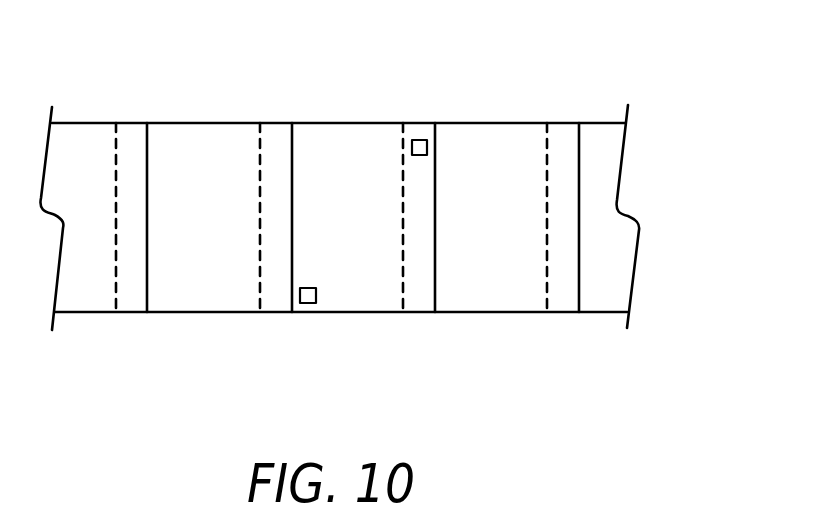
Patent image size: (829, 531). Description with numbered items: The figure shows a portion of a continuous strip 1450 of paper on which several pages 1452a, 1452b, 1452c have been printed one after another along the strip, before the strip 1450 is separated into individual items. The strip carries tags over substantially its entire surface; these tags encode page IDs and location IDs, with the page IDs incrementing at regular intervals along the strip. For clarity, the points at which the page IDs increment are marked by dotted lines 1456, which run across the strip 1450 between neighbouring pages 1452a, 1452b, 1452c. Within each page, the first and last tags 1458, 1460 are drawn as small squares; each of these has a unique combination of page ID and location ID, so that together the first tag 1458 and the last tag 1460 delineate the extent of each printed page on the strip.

The continuous strip 1450 is at (595, 188).
The page 1452a is at (292, 113).
The page 1452b is at (434, 113).
The page 1452c is at (578, 113).
The dotted lines 1456 is at (260, 292).
The first tag 1458 is at (313, 305).
The last tag 1460 is at (421, 144).